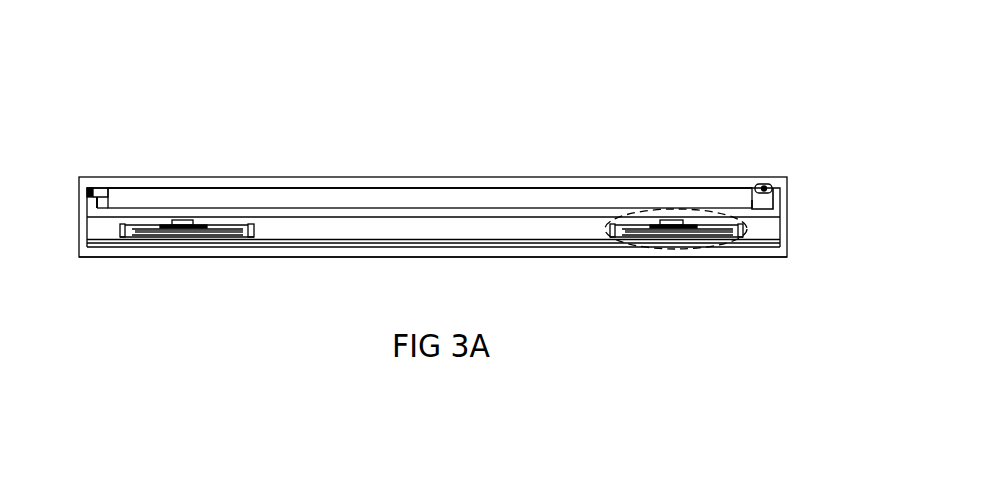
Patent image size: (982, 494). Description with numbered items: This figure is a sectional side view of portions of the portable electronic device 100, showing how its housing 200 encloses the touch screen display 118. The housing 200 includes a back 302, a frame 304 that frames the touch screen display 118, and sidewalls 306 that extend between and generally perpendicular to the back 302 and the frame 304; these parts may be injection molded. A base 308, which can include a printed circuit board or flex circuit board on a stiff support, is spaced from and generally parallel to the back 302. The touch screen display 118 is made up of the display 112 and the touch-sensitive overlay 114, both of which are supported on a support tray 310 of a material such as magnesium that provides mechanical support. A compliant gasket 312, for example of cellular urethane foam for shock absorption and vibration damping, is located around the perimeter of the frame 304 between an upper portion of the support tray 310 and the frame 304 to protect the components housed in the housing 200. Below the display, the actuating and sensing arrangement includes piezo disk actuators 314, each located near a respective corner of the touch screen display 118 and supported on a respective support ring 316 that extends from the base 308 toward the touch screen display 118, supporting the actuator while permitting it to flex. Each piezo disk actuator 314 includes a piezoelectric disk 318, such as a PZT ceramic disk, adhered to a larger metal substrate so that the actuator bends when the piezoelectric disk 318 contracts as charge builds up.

The portable electronic device 100 is at (608, 82).
The touch screen display 118 is at (192, 165).
The housing 200 is at (90, 262).
The display 112 is at (345, 193).
The touch-sensitive overlay 114 is at (410, 184).
The back 302 is at (492, 249).
The frame 304 is at (99, 188).
The sidewalls 306 is at (783, 237).
The base 308 is at (283, 238).
The support tray 310 is at (768, 205).
The compliant gasket 312 is at (762, 186).
The piezo disk actuator 314 is at (693, 248).
The support ring 316 is at (122, 231).
The piezoelectric disk 318 is at (140, 232).